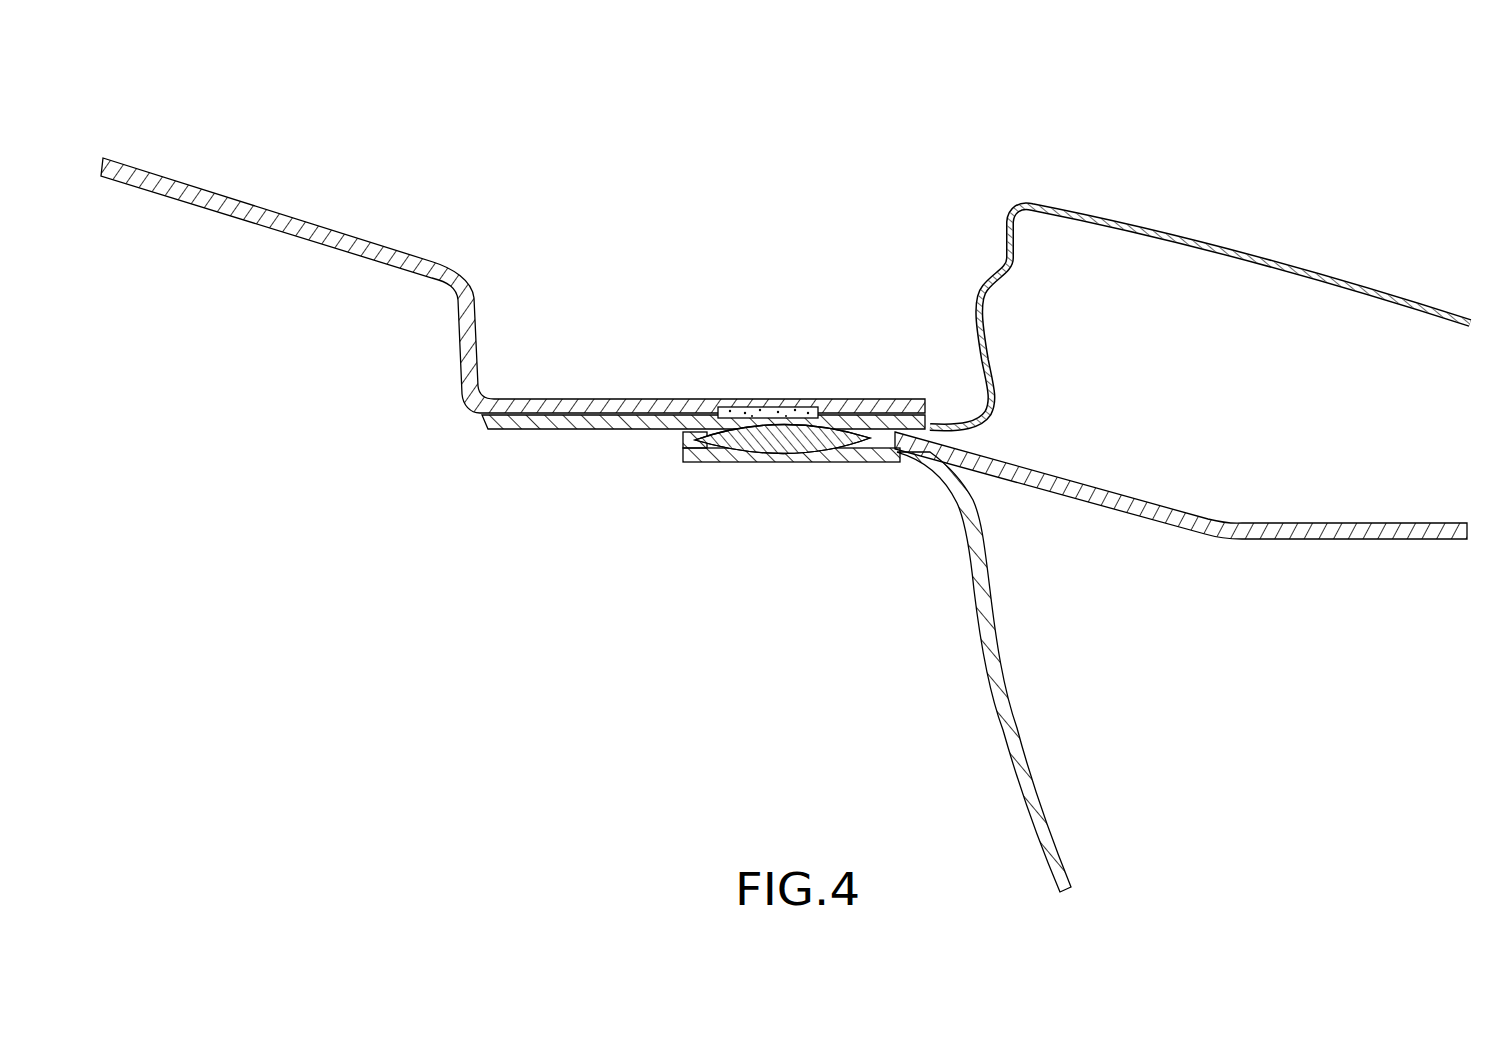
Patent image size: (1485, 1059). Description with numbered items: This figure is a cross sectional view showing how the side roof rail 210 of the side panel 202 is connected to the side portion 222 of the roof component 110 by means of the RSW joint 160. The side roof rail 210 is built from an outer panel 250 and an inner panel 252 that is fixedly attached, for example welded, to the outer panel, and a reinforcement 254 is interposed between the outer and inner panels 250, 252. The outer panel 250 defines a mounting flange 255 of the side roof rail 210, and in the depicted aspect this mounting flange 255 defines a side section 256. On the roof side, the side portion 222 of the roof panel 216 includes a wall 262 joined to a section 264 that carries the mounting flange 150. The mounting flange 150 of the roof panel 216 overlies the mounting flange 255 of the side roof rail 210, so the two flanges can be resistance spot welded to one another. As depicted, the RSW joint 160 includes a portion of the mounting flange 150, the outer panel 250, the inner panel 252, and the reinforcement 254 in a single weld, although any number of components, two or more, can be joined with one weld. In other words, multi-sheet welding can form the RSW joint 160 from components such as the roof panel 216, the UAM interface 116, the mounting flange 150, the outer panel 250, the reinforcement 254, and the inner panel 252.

The roof component 110 is at (847, 310).
The UAM interface 116 is at (818, 400).
The mounting flange 150 is at (608, 436).
The RSW joint 160 is at (773, 456).
The side panel 202 is at (1110, 156).
The side roof rail 210 is at (1224, 684).
The roof panel 216 is at (660, 398).
The side portion 222 is at (181, 140).
The outer panel 250 is at (711, 460).
The inner panel 252 is at (836, 458).
The reinforcement 254 is at (743, 456).
The mounting flange 255 is at (678, 436).
The side section 256 is at (940, 425).
The wall 262 is at (580, 398).
The section 264 is at (583, 432).